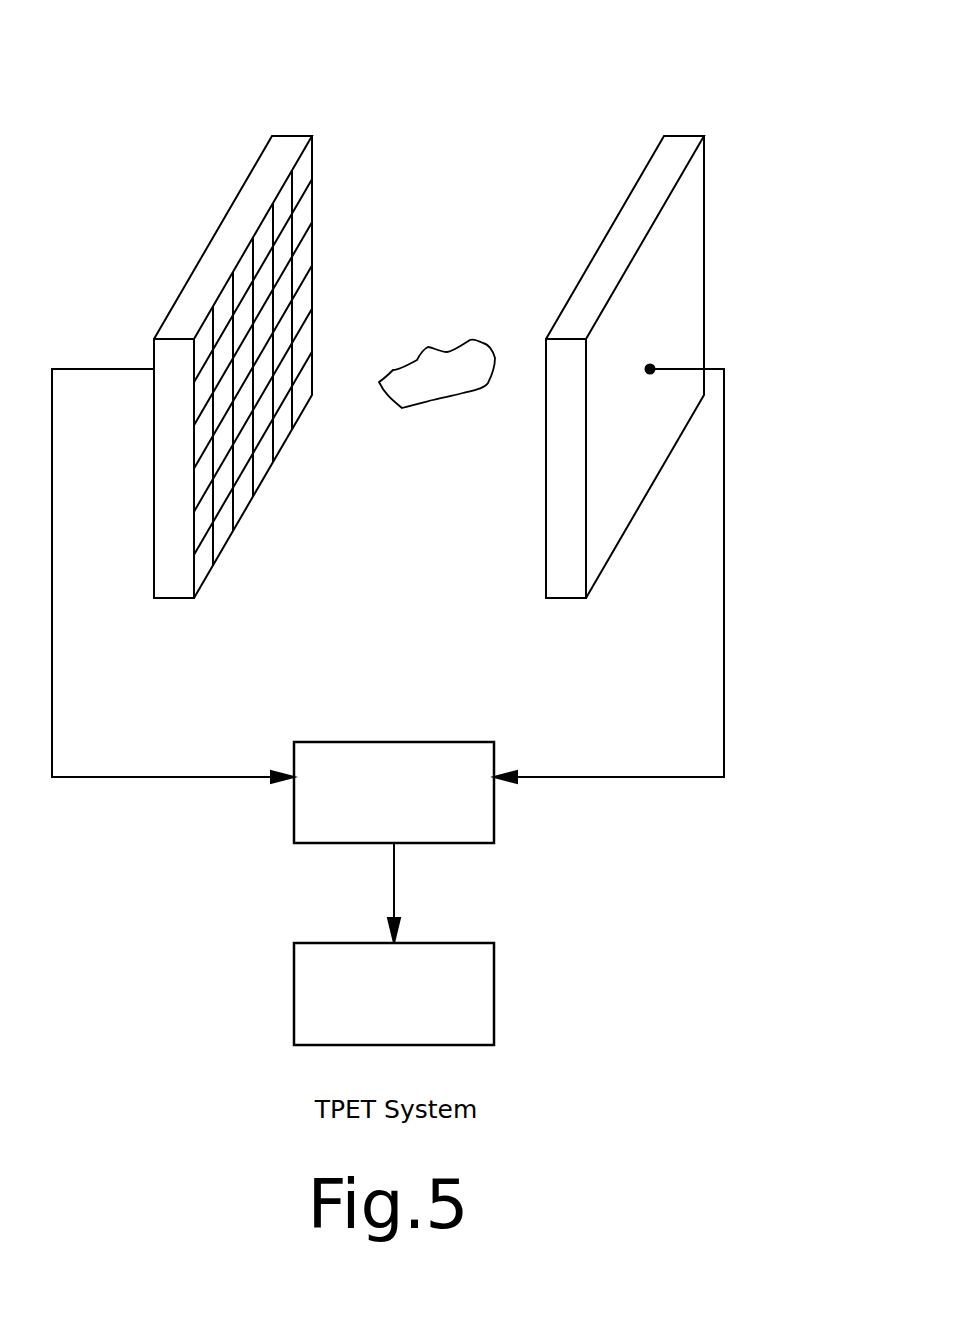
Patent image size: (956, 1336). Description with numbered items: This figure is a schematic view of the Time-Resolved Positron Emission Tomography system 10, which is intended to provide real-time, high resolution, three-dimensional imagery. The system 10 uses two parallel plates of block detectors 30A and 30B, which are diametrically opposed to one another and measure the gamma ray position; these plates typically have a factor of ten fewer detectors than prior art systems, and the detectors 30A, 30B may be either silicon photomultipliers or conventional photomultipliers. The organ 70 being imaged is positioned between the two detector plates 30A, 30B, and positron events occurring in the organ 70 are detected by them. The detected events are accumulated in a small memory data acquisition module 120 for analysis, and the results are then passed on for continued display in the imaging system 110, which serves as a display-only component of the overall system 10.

The TPET system 10 is at (162, 155).
The block detector 30A is at (230, 252).
The block detector 30B is at (623, 240).
The organ 70 is at (438, 373).
The data acquisition module 120 is at (494, 815).
The imaging system 110 is at (494, 995).